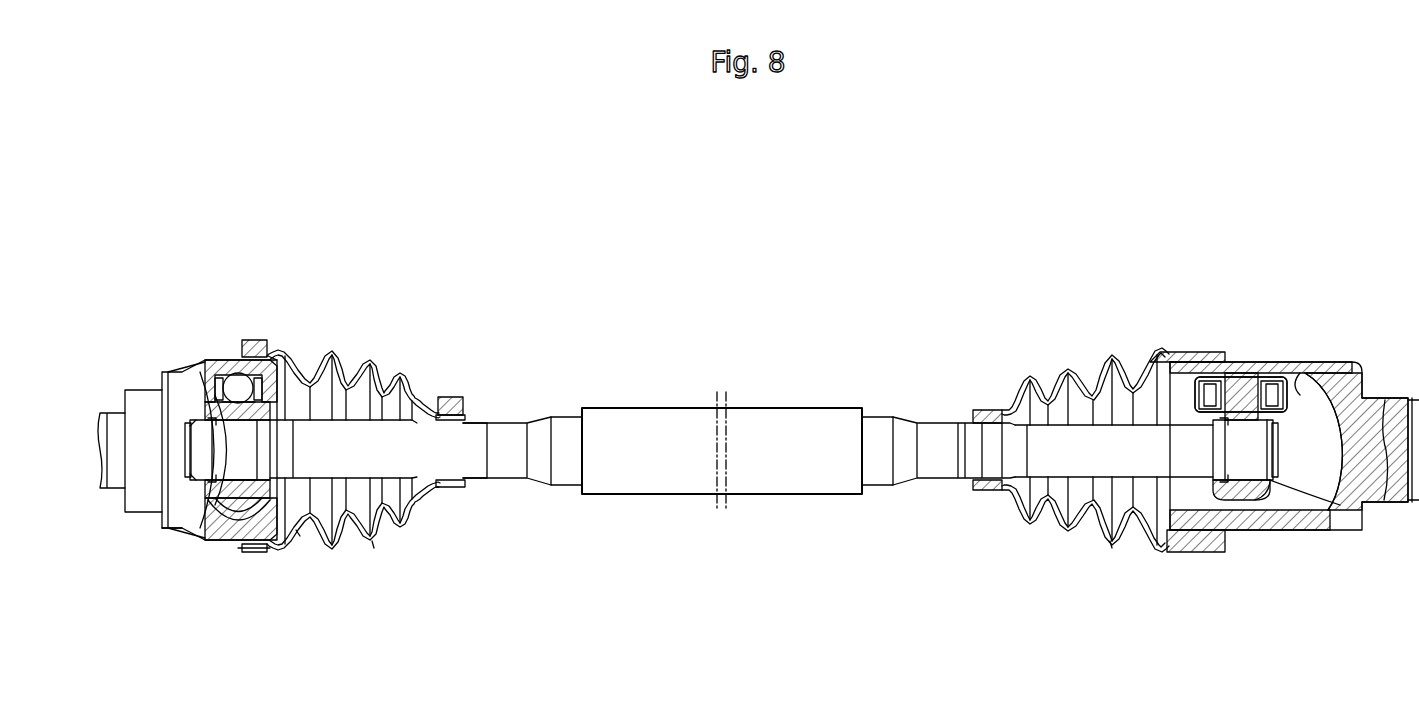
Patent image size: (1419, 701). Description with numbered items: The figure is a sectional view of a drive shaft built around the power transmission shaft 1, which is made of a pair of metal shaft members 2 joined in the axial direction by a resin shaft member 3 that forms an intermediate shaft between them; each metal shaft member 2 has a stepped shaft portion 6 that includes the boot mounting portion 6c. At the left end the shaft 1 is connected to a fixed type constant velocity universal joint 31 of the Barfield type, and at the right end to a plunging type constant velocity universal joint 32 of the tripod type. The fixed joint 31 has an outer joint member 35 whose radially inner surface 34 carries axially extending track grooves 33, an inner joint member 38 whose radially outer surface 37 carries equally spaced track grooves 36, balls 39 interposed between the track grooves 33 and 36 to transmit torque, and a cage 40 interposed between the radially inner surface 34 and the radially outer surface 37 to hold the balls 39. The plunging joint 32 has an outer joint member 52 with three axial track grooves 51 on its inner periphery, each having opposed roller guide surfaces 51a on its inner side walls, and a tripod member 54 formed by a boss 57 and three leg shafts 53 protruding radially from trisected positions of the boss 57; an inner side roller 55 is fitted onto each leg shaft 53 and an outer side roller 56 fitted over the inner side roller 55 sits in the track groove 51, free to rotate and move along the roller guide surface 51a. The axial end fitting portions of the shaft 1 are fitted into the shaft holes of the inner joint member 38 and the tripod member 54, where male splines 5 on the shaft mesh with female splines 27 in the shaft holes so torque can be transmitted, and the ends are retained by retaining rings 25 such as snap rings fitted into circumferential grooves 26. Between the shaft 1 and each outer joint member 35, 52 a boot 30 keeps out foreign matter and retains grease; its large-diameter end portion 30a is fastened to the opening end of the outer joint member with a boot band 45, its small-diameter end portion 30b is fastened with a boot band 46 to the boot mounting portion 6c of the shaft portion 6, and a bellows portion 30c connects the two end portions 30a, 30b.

The power transmission shaft 1 is at (781, 398).
The metal shaft member 2 is at (500, 405).
The resin shaft member 3 is at (665, 497).
The male spline 5 is at (196, 522).
The shaft 6 is at (386, 418).
The boot mounting portion 6c is at (478, 462).
The retaining ring 25 is at (194, 372).
The circumferential groove 26 is at (188, 480).
The female spline 27 is at (198, 432).
The boot 30 is at (336, 348).
The large-diameter end portion 30a is at (256, 552).
The small-diameter end portion 30b is at (454, 488).
The bellows portion 30c is at (375, 543).
The fixed type constant velocity universal joint 31 is at (214, 290).
The plunging type constant velocity universal joint 32 is at (1322, 292).
The track groove 33 is at (283, 360).
The radially inner surface 34 is at (210, 541).
The outer joint member 35 is at (203, 404).
The track groove 36 is at (290, 428).
The radially outer surface 37 is at (246, 549).
The inner joint member 38 is at (166, 532).
The ball 39 is at (224, 374).
The cage 40 is at (300, 532).
The boot band 45 is at (255, 340).
The boot band 46 is at (450, 397).
The track groove 51 is at (1320, 362).
The roller guide surface 51a is at (1342, 365).
The outer joint member 52 is at (1326, 532).
The leg shaft 53 is at (1240, 373).
The tripod member 54 is at (1270, 492).
The inner side roller 55 is at (1283, 400).
The outer side roller 56 is at (1280, 376).
The boss 57 is at (1236, 500).